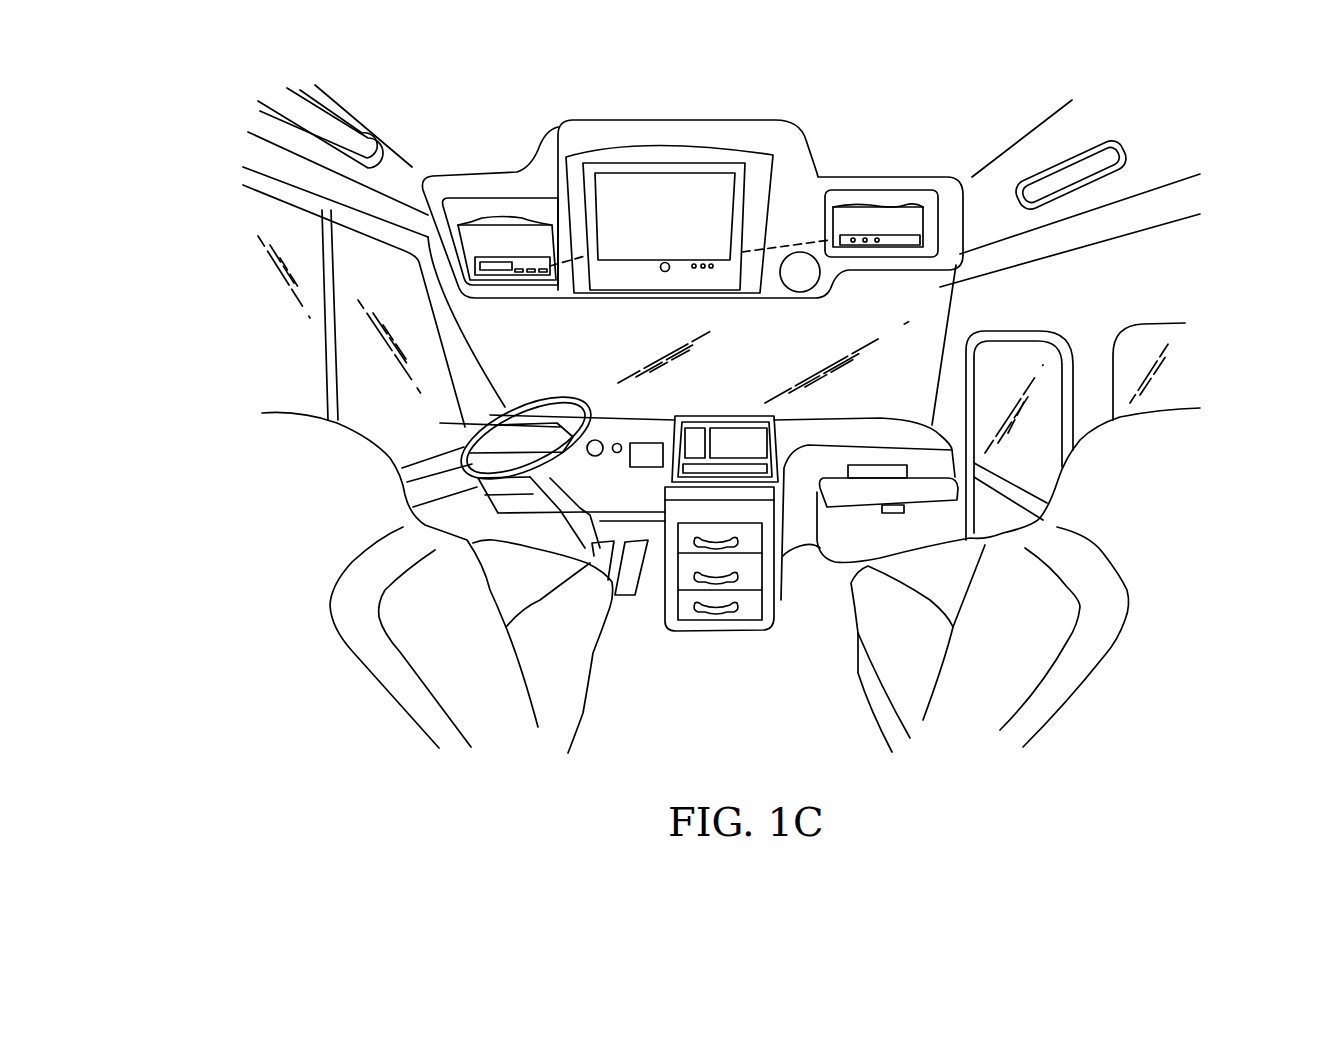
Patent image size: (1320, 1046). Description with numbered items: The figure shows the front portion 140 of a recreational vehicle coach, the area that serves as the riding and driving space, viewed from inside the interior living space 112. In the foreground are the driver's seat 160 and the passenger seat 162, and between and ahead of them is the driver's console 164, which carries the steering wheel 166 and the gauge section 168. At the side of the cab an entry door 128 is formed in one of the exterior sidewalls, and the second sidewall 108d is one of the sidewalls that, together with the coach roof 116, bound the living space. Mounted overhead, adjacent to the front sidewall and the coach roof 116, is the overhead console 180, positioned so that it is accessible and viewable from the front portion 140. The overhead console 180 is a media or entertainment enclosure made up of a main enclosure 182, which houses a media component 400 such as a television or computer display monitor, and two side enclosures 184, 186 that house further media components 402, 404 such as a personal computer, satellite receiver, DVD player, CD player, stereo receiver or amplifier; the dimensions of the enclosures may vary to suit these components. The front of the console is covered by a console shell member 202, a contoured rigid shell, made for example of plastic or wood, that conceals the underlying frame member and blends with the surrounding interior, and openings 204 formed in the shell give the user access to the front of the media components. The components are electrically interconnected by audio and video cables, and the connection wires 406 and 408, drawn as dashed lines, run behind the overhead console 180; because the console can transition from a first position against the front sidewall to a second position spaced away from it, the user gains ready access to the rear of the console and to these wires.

The second sidewall 108d is at (268, 128).
The interior living space 112 is at (611, 342).
The coach roof 116 is at (410, 96).
The entry door 128 is at (1030, 333).
The front portion 140 is at (679, 703).
The driver's seat 160 is at (307, 428).
The passenger seat 162 is at (1157, 423).
The driver's console 164 is at (795, 438).
The steering wheel 166 is at (492, 440).
The gauge section 168 is at (632, 477).
The overhead console 180 is at (785, 207).
The main enclosure 182 is at (692, 205).
The side enclosure 184 is at (910, 212).
The side enclosure 186 is at (488, 245).
The console shell member 202 is at (778, 128).
The openings 204 is at (518, 243).
The media component 400 is at (620, 170).
The media component 402 is at (505, 258).
The media component 404 is at (893, 233).
The connection wire 406 is at (570, 265).
The connection wire 408 is at (800, 237).